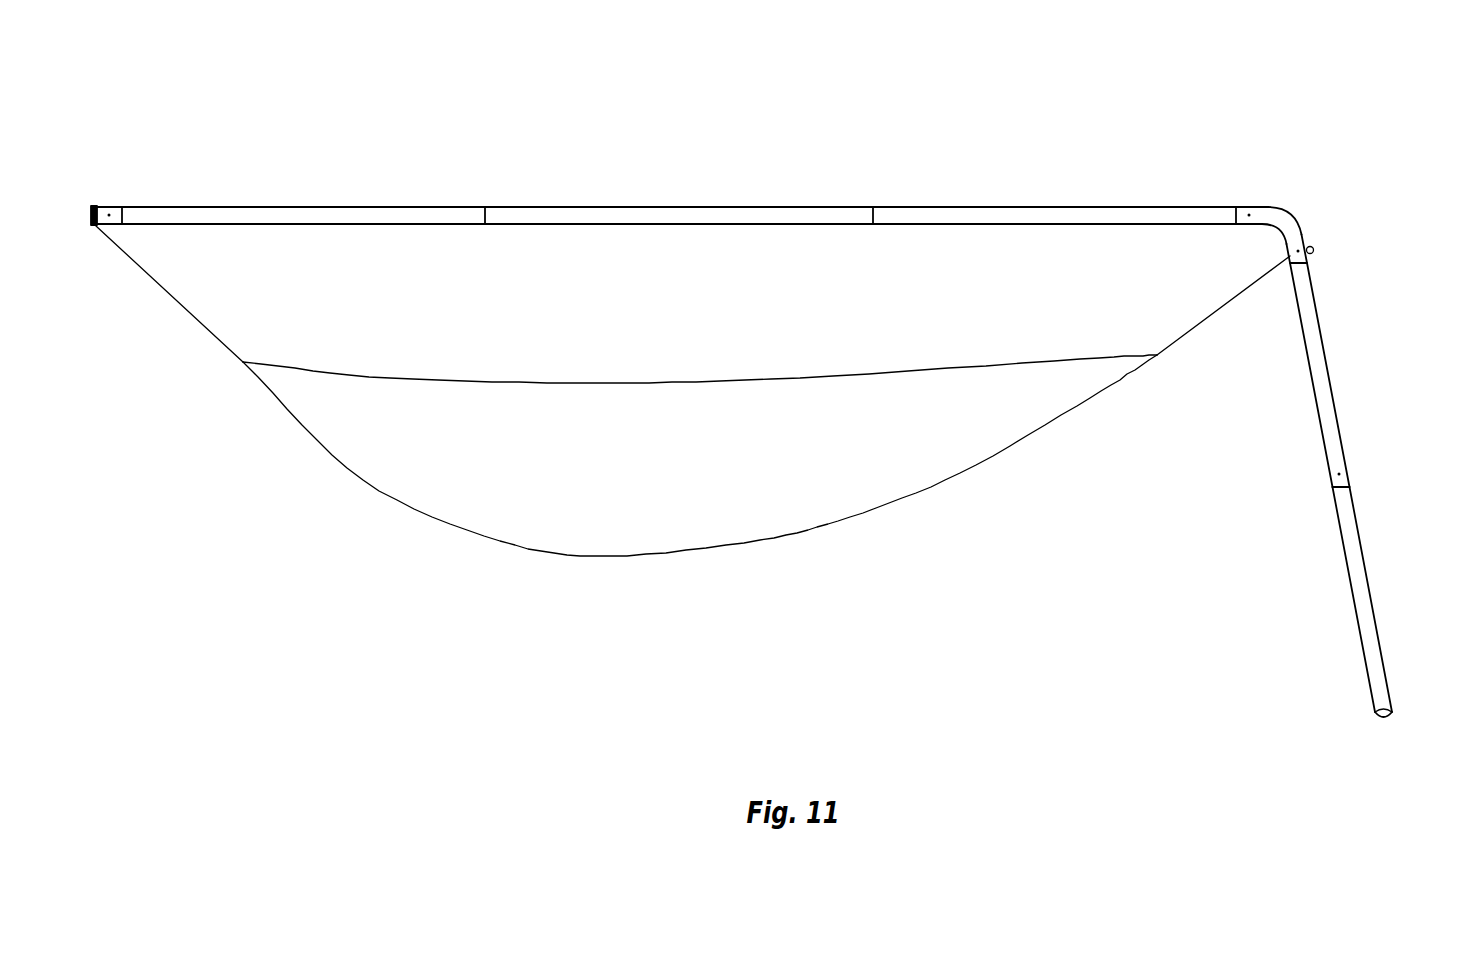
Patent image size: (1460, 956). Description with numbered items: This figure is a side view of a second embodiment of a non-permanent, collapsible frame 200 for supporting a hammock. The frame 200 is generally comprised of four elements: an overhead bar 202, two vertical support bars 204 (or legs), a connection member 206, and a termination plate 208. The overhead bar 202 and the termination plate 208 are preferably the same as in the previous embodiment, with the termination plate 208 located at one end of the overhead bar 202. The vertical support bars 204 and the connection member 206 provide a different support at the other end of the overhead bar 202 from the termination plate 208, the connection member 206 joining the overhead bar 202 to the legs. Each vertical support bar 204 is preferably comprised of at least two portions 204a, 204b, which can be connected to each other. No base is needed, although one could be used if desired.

The non-permanent, collapsible frame 200 is at (1170, 108).
The overhead bar 202 is at (727, 207).
The vertical support bar 204 is at (1340, 424).
The first portion of vertical support bar 204a is at (1316, 333).
The second portion of vertical support bar 204b is at (1355, 558).
The connection member 206 is at (1272, 207).
The termination plate 208 is at (113, 207).